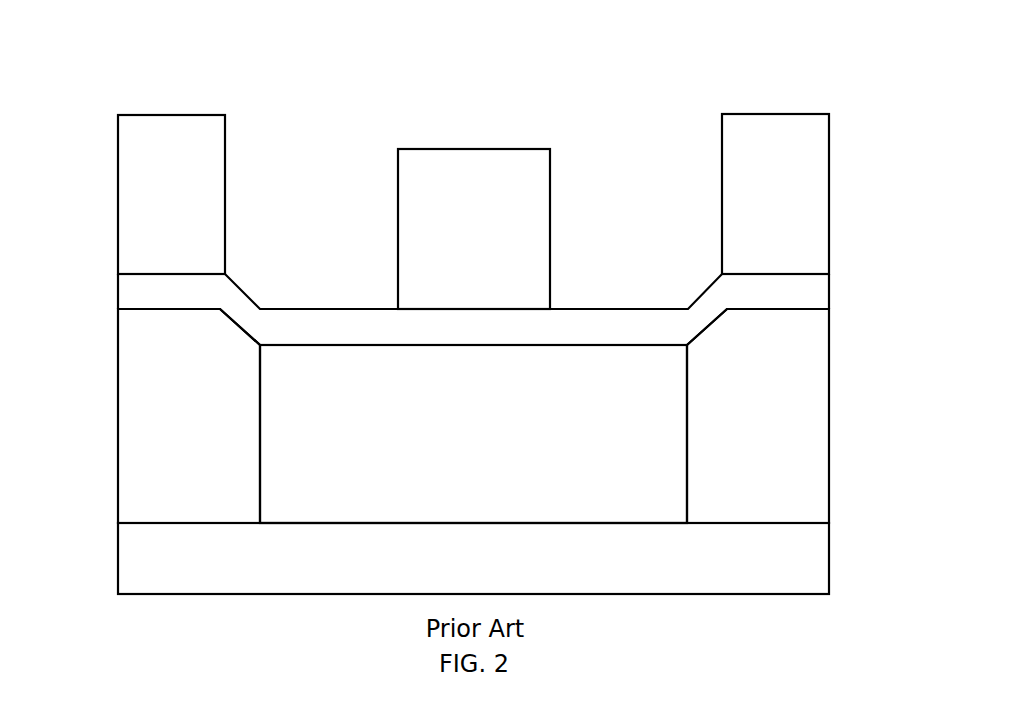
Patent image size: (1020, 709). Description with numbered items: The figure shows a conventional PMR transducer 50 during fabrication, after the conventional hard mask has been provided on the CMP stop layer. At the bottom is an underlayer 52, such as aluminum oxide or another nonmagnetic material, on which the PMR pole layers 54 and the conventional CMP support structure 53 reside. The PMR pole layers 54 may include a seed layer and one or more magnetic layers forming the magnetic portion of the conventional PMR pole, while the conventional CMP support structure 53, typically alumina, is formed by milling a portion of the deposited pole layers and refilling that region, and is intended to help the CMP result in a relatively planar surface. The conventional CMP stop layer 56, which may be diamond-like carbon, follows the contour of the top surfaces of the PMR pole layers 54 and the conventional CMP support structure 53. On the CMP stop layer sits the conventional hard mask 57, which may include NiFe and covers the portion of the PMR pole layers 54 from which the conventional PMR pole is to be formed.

The conventional PMR transducer 50 is at (490, 108).
The underlayer 52 is at (830, 561).
The conventional CMP support structure 53 is at (118, 490).
The PMR pole layers 54 is at (332, 345).
The conventional CMP stop layer 56 is at (118, 288).
The conventional hard mask 57 is at (118, 208).